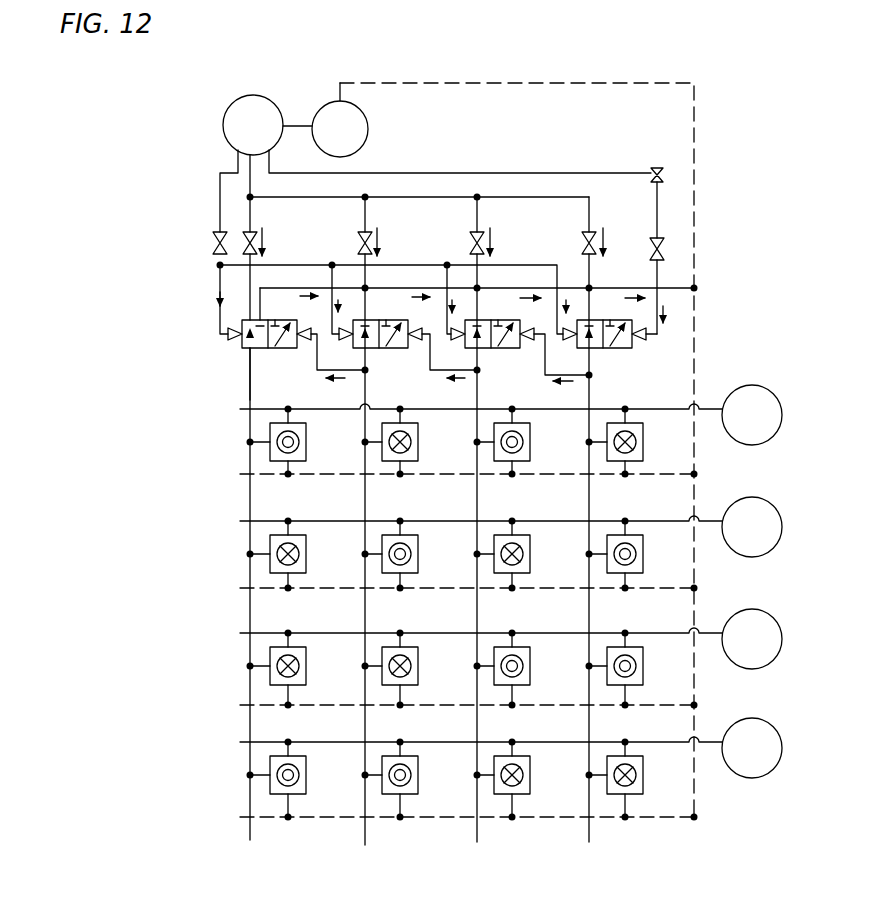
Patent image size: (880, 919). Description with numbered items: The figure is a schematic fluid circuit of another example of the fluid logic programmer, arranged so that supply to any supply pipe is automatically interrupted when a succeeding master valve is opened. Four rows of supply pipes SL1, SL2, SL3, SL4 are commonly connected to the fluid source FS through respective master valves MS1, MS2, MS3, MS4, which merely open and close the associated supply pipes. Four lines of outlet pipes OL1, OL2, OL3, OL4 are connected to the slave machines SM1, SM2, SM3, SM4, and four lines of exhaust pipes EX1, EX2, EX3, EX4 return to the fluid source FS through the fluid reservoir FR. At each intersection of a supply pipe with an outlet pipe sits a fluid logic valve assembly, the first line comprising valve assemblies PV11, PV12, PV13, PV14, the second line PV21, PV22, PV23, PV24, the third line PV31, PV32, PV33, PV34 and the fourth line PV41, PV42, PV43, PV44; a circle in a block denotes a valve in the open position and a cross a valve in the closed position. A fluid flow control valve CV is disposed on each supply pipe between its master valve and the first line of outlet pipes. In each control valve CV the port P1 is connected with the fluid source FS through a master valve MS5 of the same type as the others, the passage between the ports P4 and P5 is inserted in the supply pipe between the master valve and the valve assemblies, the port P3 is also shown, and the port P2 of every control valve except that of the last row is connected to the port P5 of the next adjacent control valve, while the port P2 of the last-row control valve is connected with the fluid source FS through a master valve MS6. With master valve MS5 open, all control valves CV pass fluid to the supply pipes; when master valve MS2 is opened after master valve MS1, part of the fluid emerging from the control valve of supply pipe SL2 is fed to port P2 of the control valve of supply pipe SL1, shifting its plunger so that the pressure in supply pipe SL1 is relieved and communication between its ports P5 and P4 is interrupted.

The fluid source FS is at (253, 125).
The fluid reservoir FR is at (325, 120).
The master valve MS1 is at (254, 236).
The master valve MS2 is at (367, 236).
The master valve MS3 is at (480, 236).
The master valve MS4 is at (591, 236).
The master valve MS5 is at (214, 241).
The master valve MS6 is at (662, 246).
The fluid flow control valve CV is at (242, 334).
The port P1 is at (220, 317).
The port P2 is at (317, 360).
The port P3 is at (261, 305).
The port P4 is at (250, 362).
The port P5 is at (256, 282).
The supply pipe SL1 is at (247, 563).
The supply pipe SL2 is at (353, 535).
The supply pipe SL3 is at (470, 535).
The supply pipe SL4 is at (575, 535).
The outlet pipe OL1 is at (448, 410).
The outlet pipe OL2 is at (448, 522).
The outlet pipe OL3 is at (448, 634).
The outlet pipe OL4 is at (448, 743).
The exhaust pipe EX1 is at (436, 474).
The exhaust pipe EX2 is at (436, 588).
The exhaust pipe EX3 is at (436, 705).
The exhaust pipe EX4 is at (436, 817).
The fluid logic valve assembly PV11 is at (300, 442).
The fluid logic valve assembly PV12 is at (414, 442).
The fluid logic valve assembly PV13 is at (526, 442).
The fluid logic valve assembly PV14 is at (638, 442).
The fluid logic valve assembly PV21 is at (300, 555).
The fluid logic valve assembly PV22 is at (414, 555).
The fluid logic valve assembly PV23 is at (526, 555).
The fluid logic valve assembly PV24 is at (638, 555).
The fluid logic valve assembly PV31 is at (300, 669).
The fluid logic valve assembly PV32 is at (414, 669).
The fluid logic valve assembly PV33 is at (526, 669).
The fluid logic valve assembly PV34 is at (638, 669).
The fluid logic valve assembly PV41 is at (300, 780).
The fluid logic valve assembly PV42 is at (414, 780).
The fluid logic valve assembly PV43 is at (526, 780).
The fluid logic valve assembly PV44 is at (638, 780).
The slave machine SM1 is at (752, 415).
The slave machine SM2 is at (752, 527).
The slave machine SM3 is at (752, 639).
The slave machine SM4 is at (752, 748).